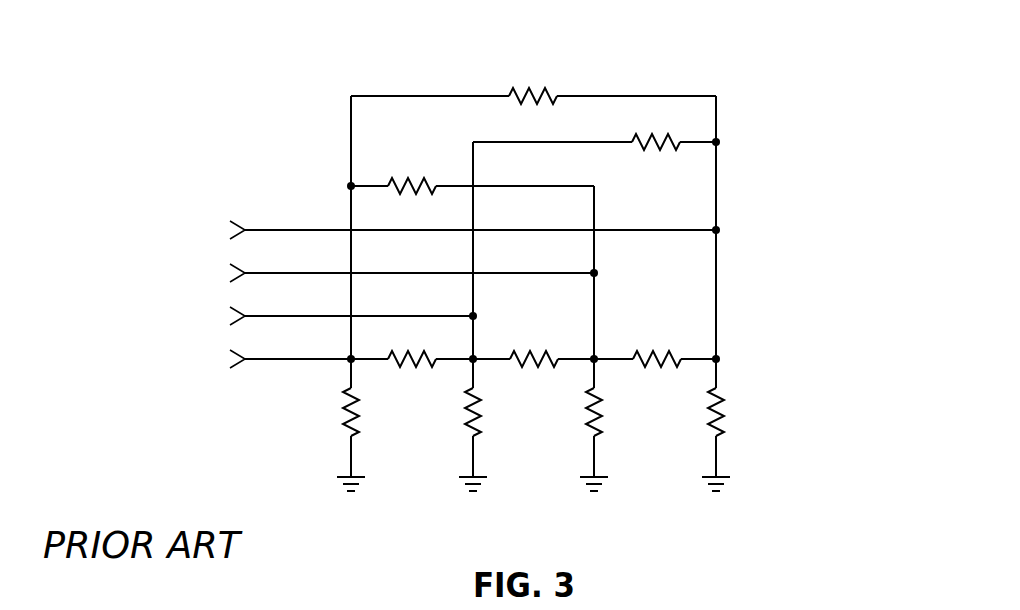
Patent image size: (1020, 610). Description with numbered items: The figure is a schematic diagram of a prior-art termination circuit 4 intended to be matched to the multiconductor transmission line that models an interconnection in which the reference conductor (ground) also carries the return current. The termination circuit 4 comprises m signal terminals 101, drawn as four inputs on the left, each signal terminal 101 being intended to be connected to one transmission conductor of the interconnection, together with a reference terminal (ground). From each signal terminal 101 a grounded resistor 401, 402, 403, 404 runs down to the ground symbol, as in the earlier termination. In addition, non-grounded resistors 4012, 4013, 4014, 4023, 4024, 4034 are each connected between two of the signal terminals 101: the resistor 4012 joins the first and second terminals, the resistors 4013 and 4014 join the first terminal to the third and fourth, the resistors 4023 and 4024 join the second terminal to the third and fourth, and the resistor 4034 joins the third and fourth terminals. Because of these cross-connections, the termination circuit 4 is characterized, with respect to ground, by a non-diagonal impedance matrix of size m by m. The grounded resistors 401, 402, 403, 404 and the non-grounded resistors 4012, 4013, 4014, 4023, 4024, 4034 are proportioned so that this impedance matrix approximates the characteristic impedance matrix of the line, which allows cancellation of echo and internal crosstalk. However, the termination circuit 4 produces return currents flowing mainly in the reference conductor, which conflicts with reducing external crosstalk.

The termination circuit 4 is at (833, 47).
The signal terminal 101 is at (208, 232).
The grounded resistor 401 is at (338, 428).
The grounded resistor 402 is at (460, 428).
The grounded resistor 403 is at (581, 428).
The grounded resistor 404 is at (703, 428).
The non-grounded resistor 4012 is at (408, 373).
The non-grounded resistor 4013 is at (410, 173).
The non-grounded resistor 4014 is at (537, 80).
The non-grounded resistor 4023 is at (532, 373).
The non-grounded resistor 4024 is at (660, 158).
The non-grounded resistor 4034 is at (657, 373).